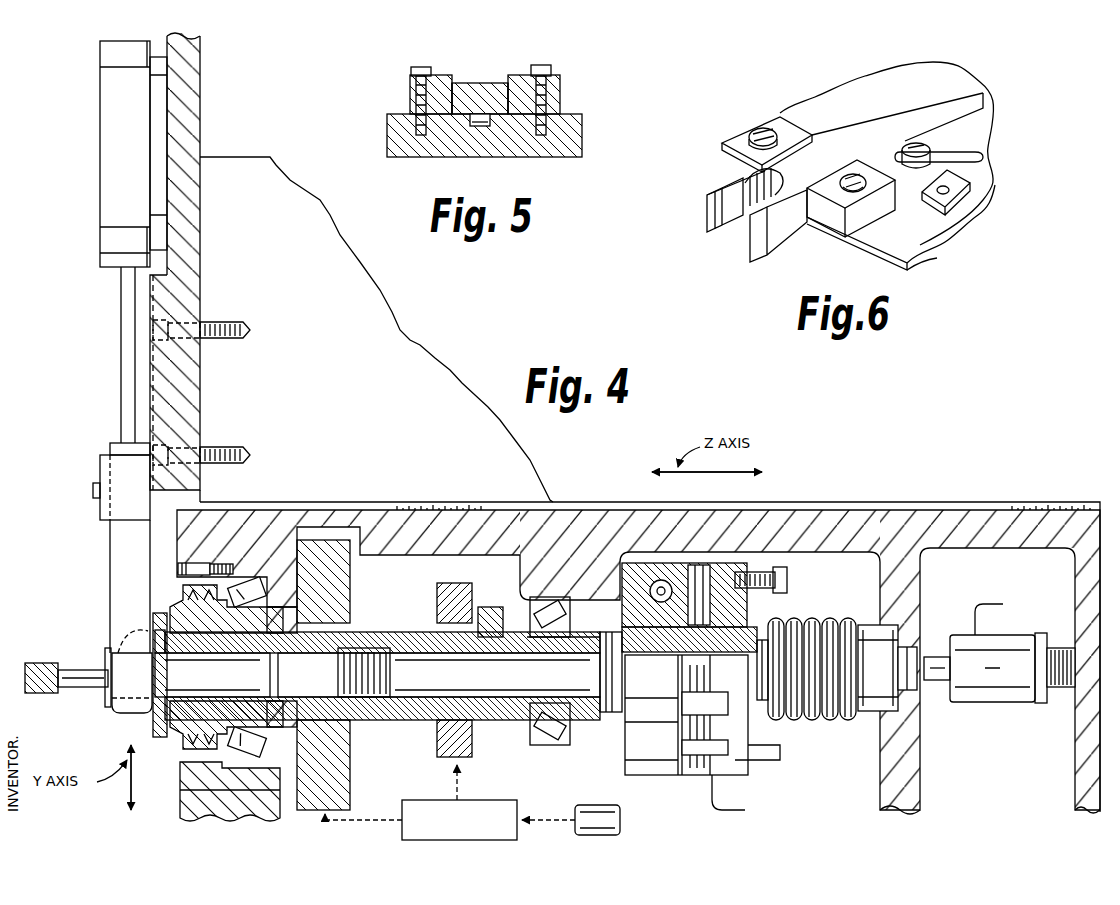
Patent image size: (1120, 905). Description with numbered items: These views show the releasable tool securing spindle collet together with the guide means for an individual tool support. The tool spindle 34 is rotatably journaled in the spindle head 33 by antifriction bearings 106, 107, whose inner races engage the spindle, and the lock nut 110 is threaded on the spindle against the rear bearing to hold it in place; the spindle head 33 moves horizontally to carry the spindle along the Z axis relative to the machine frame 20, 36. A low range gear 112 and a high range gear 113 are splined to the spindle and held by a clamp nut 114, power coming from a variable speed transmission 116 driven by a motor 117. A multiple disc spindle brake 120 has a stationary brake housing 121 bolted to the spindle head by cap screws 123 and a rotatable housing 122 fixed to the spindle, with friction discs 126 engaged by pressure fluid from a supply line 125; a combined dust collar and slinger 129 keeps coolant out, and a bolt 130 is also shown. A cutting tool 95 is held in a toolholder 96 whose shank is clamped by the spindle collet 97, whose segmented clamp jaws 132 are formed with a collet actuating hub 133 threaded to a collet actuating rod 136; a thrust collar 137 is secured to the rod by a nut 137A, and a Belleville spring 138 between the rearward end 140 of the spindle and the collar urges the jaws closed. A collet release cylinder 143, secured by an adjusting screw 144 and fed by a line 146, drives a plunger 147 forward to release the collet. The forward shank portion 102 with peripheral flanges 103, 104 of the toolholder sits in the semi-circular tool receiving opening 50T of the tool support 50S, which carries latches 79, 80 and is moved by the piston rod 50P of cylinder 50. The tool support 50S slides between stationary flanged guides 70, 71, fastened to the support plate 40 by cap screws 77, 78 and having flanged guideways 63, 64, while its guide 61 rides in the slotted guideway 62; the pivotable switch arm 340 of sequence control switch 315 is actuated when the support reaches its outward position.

In FIG. 4, the machine frame outline 20 is at (358, 322).
In FIG. 4, the spindle head 33 is at (835, 522).
In FIG. 4, the tool spindle 34 is at (182, 604).
In FIG. 4, the frame wall 36 is at (206, 108).
In FIG. 4, the support plate 40 is at (180, 392).
In FIG. 5, the support plate 40 is at (572, 146).
In FIG. 6, the support plate 40 is at (903, 210).
In FIG. 4, the cylinder 50 is at (133, 145).
In FIG. 4, the piston rod 50P is at (121, 285).
In FIG. 4, the tool support 50S is at (143, 567).
In FIG. 5, the tool support 50S is at (477, 82).
In FIG. 6, the tool support 50S is at (903, 130).
In FIG. 4, the semi-circular tool receiving opening 50T is at (110, 706).
In FIG. 6, the semi-circular tool receiving opening 50T is at (742, 236).
In FIG. 4, the guide 61 is at (160, 507).
In FIG. 5, the guide 61 is at (488, 128).
In FIG. 5, the slotted guideway 62 is at (475, 128).
In FIG. 5, the flanged guideway 63 is at (455, 78).
In FIG. 5, the flanged guideway 64 is at (504, 78).
In FIG. 5, the stationary flanged guide 70 is at (411, 90).
In FIG. 6, the stationary flanged guide 70 is at (783, 123).
In FIG. 4, the stationary flanged guide 71 is at (118, 468).
In FIG. 5, the stationary flanged guide 71 is at (556, 99).
In FIG. 6, the stationary flanged guide 71 is at (845, 202).
In FIG. 5, the cap screw 77 is at (422, 66).
In FIG. 6, the cap screw 77 is at (757, 122).
In FIG. 5, the cap screw 78 is at (545, 67).
In FIG. 6, the cap screw 78 is at (852, 172).
In FIG. 6, the tool engaging latch 79 is at (732, 212).
In FIG. 6, the tool engaging latch 80 is at (762, 248).
In FIG. 4, the cutting tool 95 is at (33, 694).
In FIG. 4, the toolholder 96 is at (252, 668).
In FIG. 4, the spindle collet 97 is at (158, 638).
In FIG. 4, the forward shank portion 102 is at (128, 633).
In FIG. 4, the peripheral flange 103 is at (107, 713).
In FIG. 4, the peripheral flange 104 is at (150, 714).
In FIG. 4, the antifriction bearing 106 is at (240, 795).
In FIG. 4, the antifriction bearing 107 is at (560, 606).
In FIG. 4, the lock nut 110 is at (576, 724).
In FIG. 4, the low range gear 112 is at (346, 582).
In FIG. 4, the high range gear 113 is at (452, 596).
In FIG. 4, the clamp nut 114 is at (492, 740).
In FIG. 4, the variable speed transmission 116 is at (472, 829).
In FIG. 4, the motor 117 is at (574, 808).
In FIG. 4, the multiple disc spindle brake 120 is at (680, 692).
In FIG. 4, the stationary brake housing 121 is at (736, 758).
In FIG. 4, the rotatable brake housing 122 is at (625, 768).
In FIG. 4, the cap screws 123 is at (786, 576).
In FIG. 4, the supply line 125 is at (746, 810).
In FIG. 4, the friction discs 126 is at (735, 608).
In FIG. 4, the combined dust collar and slinger 129 is at (240, 570).
In FIG. 4, the bearing 130 is at (200, 551).
In FIG. 4, the segmented clamp jaws 132 is at (200, 718).
In FIG. 4, the collet actuating hub 133 is at (355, 642).
In FIG. 4, the collet actuating rod 136 is at (511, 660).
In FIG. 4, the thrust collar 137 is at (880, 695).
In FIG. 4, the nut 137A is at (910, 647).
In FIG. 4, the Belleville spring 138 is at (812, 611).
In FIG. 4, the rearward end of the spindle 140 is at (764, 700).
In FIG. 4, the collet release cylinder 143 is at (992, 705).
In FIG. 4, the adjusting screw 144 is at (1062, 648).
In FIG. 4, the lead wire 146 is at (992, 606).
In FIG. 4, the plunger 147 is at (933, 685).
In FIG. 6, the sequence control switch 315 is at (992, 163).
In FIG. 6, the pivotable switch arm 340 is at (967, 130).